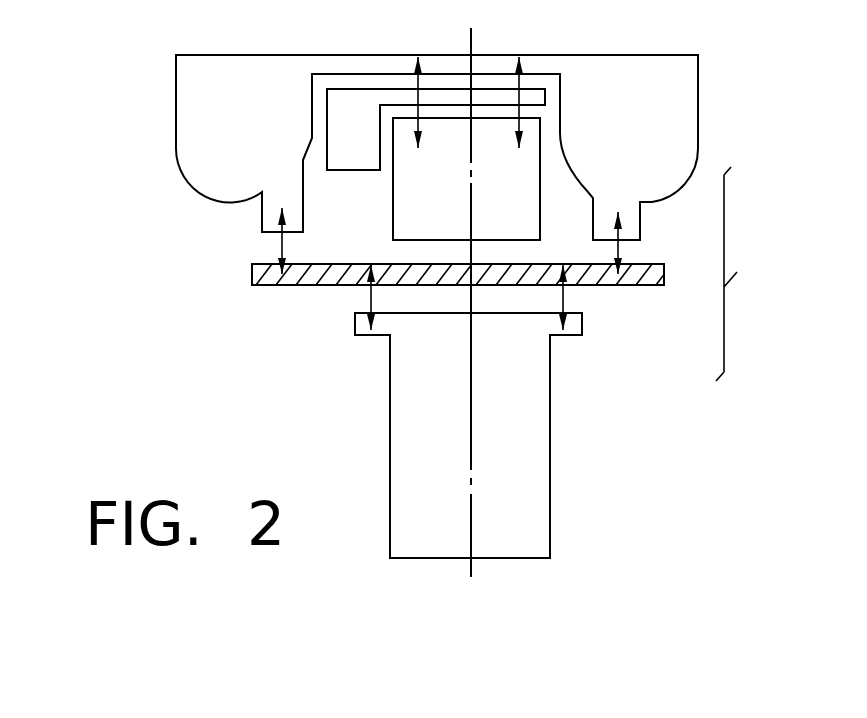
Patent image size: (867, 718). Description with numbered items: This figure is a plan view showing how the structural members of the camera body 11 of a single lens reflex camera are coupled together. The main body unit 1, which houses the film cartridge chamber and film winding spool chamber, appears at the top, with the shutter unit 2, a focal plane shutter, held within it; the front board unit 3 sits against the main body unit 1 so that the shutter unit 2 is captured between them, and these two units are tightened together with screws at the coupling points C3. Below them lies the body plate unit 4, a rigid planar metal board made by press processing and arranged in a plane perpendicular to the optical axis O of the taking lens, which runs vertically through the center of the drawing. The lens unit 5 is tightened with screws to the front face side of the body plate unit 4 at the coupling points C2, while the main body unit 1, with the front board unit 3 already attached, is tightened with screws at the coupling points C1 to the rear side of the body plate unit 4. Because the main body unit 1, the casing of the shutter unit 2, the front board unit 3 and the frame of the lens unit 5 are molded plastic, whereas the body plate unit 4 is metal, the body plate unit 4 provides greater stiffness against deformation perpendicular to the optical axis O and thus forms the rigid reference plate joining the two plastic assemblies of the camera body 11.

The main body unit 1 is at (658, 168).
The shutter unit 2 is at (342, 125).
The front board unit 3 is at (523, 191).
The body plate unit 4 is at (665, 273).
The lens unit 5 is at (530, 388).
The camera body 11 is at (746, 274).
The optical axis O is at (472, 567).
The coupling points C1 is at (280, 247).
The coupling points C2 is at (368, 297).
The coupling points C3 is at (417, 97).